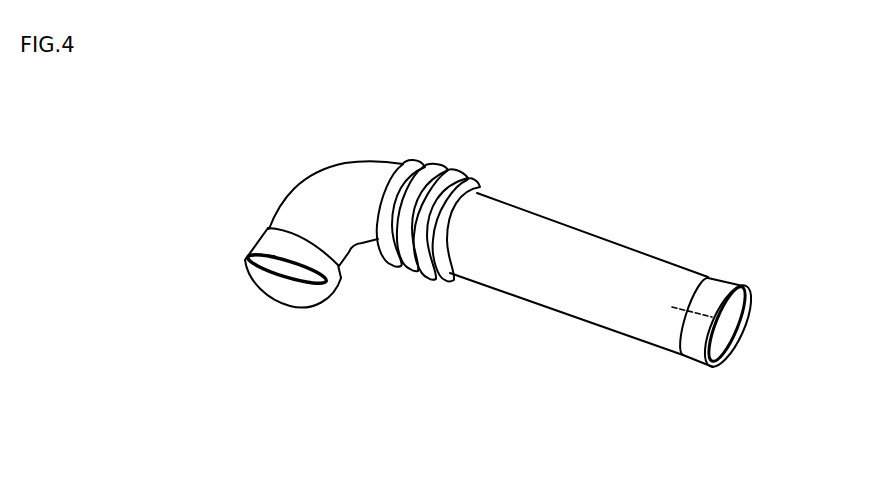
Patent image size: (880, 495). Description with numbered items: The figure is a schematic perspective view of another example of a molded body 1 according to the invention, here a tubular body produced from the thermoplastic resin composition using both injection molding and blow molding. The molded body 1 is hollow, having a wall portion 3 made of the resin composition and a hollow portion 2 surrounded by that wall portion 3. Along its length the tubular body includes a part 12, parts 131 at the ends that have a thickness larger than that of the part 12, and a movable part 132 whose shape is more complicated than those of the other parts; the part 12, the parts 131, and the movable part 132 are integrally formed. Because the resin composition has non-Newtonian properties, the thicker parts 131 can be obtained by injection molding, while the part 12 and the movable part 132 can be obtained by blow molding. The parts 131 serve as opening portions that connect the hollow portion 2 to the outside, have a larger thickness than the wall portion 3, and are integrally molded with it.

The molded body 1 is at (200, 114).
The part 12 is at (356, 171).
The parts 131 is at (270, 242).
The movable part 132 is at (459, 175).
The wall portion 3 is at (302, 309).
The hollow portion 2 is at (708, 325).